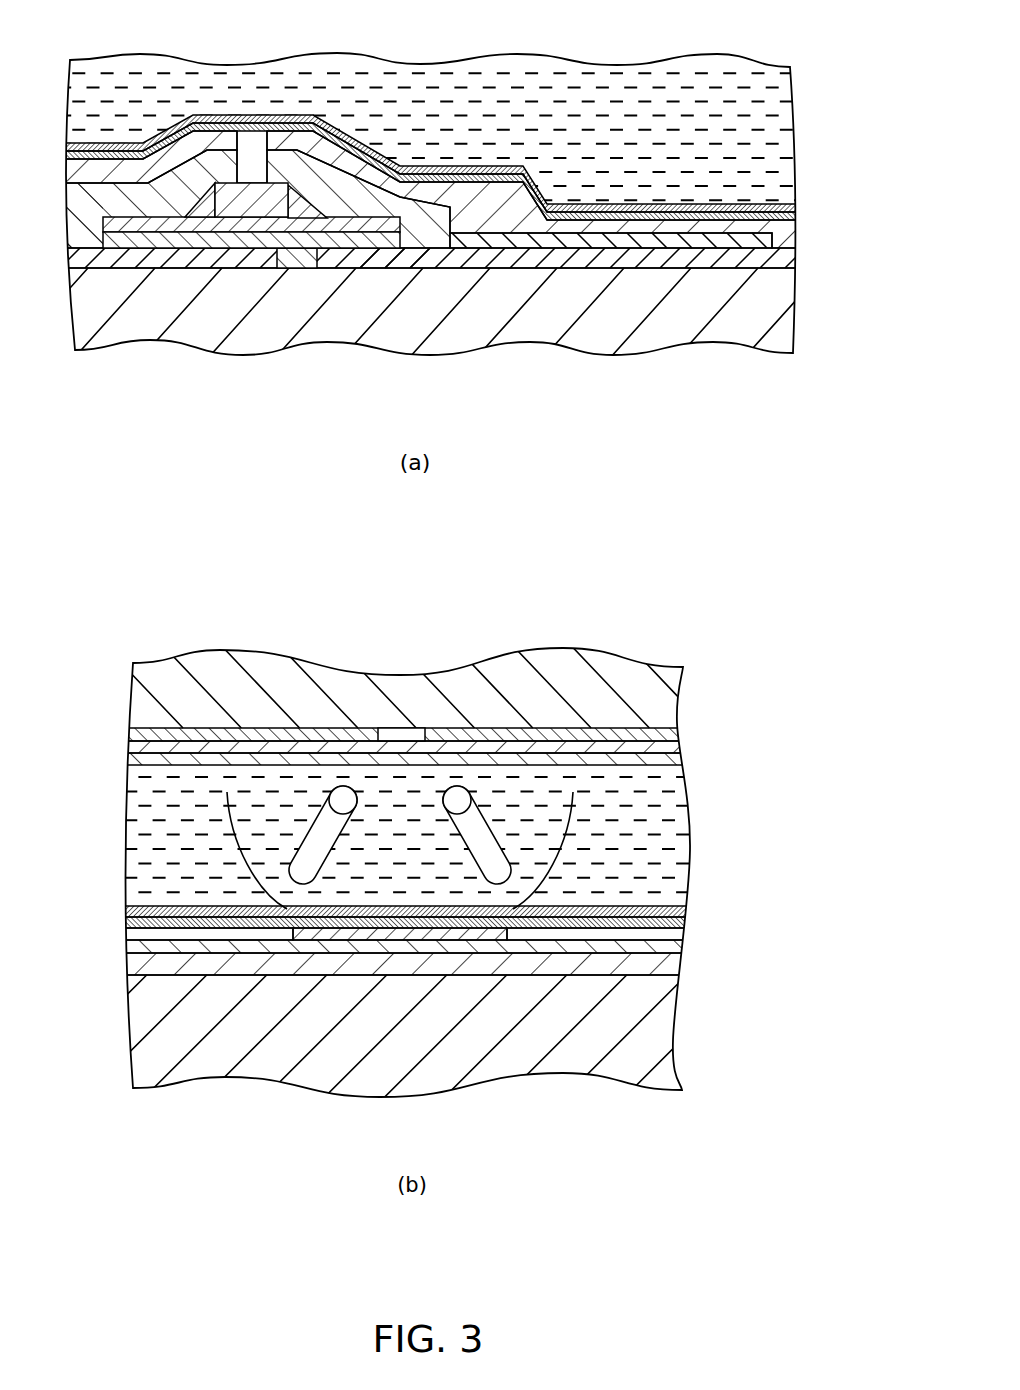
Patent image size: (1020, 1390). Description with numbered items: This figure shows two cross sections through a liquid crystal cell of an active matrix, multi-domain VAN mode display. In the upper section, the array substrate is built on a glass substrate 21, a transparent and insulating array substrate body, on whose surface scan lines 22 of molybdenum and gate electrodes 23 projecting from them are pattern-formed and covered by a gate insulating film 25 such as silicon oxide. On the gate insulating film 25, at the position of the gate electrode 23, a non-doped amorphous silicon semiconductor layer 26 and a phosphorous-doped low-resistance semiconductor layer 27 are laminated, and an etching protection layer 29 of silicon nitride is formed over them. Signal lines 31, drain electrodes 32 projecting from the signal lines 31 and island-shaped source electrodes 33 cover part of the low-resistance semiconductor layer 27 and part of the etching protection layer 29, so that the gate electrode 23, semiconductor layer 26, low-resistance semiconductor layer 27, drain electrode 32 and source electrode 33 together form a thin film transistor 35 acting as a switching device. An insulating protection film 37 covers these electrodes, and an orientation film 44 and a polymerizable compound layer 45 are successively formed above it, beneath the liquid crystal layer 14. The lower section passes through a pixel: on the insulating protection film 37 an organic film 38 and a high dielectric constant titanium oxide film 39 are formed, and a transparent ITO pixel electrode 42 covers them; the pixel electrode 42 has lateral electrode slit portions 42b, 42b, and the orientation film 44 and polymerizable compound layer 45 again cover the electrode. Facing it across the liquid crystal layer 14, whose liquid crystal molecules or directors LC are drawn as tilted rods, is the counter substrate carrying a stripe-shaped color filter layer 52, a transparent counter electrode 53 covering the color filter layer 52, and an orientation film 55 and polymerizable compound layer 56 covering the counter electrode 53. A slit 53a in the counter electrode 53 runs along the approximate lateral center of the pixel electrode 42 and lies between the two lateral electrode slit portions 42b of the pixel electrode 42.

The liquid crystal layer 14 is at (774, 138).
The glass substrate 21 is at (650, 330).
The scan lines 22 is at (436, 269).
The gate electrodes 23 is at (275, 257).
The gate insulating film 25 is at (393, 253).
The semiconductor layer 26 is at (193, 240).
The low-resistance semiconductor layer 27 is at (153, 223).
The etching protection layer 29 is at (250, 205).
The signal lines 31 is at (590, 258).
The drain electrodes 32 is at (445, 240).
The source electrodes 33 is at (93, 242).
The thin film transistor 35 is at (316, 259).
The insulating protection film 37 is at (537, 240).
The organic film 38 is at (400, 962).
The titanium oxide film 39 is at (520, 947).
The pixel electrodes 42 is at (353, 937).
The lateral electrode slit portions 42b is at (227, 935).
The orientation film 44 is at (462, 172).
The polymerizable compound layer 45 is at (222, 117).
The color filter layer 52 is at (445, 690).
The counter electrode 53 is at (664, 735).
The slit 53a is at (393, 735).
The orientation film 55 is at (665, 750).
The polymerizable compound layer 56 is at (665, 762).
The directors LC is at (313, 828).